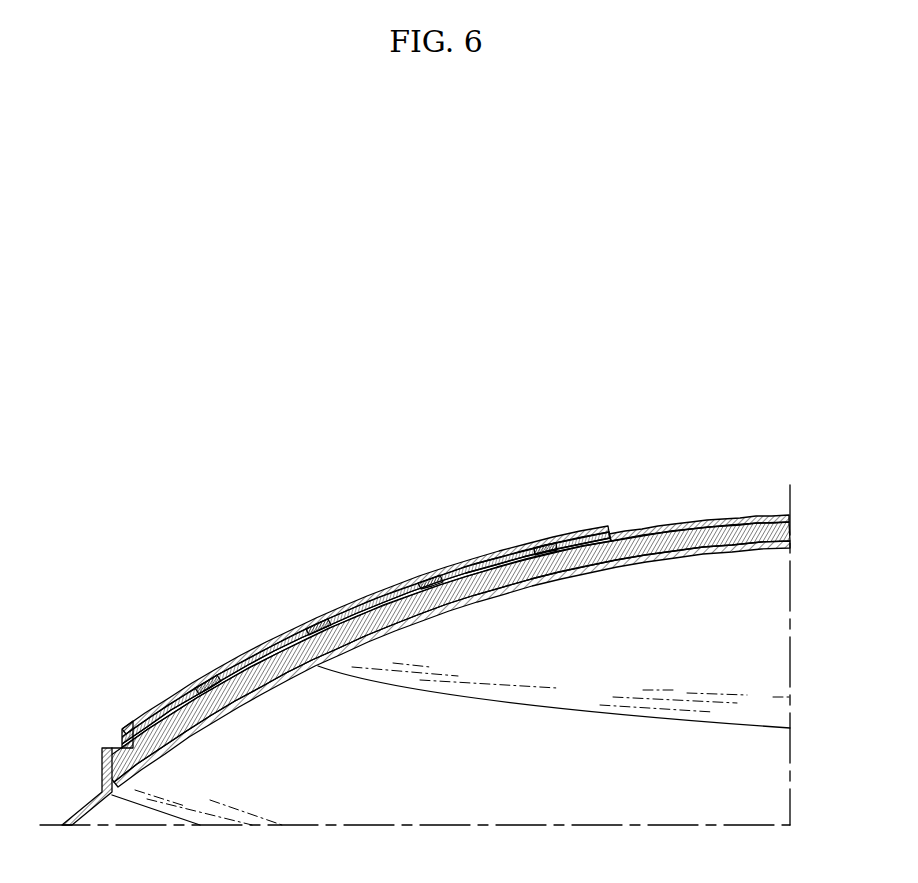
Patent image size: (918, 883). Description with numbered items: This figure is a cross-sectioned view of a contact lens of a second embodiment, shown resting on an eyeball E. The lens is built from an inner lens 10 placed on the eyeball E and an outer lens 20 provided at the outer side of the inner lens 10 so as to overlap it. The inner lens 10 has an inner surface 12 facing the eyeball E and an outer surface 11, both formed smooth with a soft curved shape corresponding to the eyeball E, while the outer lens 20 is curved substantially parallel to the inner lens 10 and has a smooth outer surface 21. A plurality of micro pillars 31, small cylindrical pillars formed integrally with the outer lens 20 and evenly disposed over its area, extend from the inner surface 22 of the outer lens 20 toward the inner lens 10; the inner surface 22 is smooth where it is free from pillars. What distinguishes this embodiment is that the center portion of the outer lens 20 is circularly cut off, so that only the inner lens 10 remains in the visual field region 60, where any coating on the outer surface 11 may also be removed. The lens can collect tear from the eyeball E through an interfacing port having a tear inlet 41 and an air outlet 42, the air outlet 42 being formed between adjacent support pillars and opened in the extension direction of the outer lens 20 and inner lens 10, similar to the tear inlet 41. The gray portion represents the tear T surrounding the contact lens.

The inner lens 10 is at (445, 662).
The outer surface 11 is at (373, 640).
The inner surface 12 is at (441, 608).
The outer lens 20 is at (353, 615).
The outer surface 21 is at (447, 578).
The inner surface 22 is at (499, 549).
The micro pillar 31 is at (207, 676).
The tear inlet 41 is at (118, 745).
The air outlet 42 is at (614, 531).
The visual field region 60 is at (727, 518).
The tear T is at (140, 716).
The eyeball E is at (750, 630).